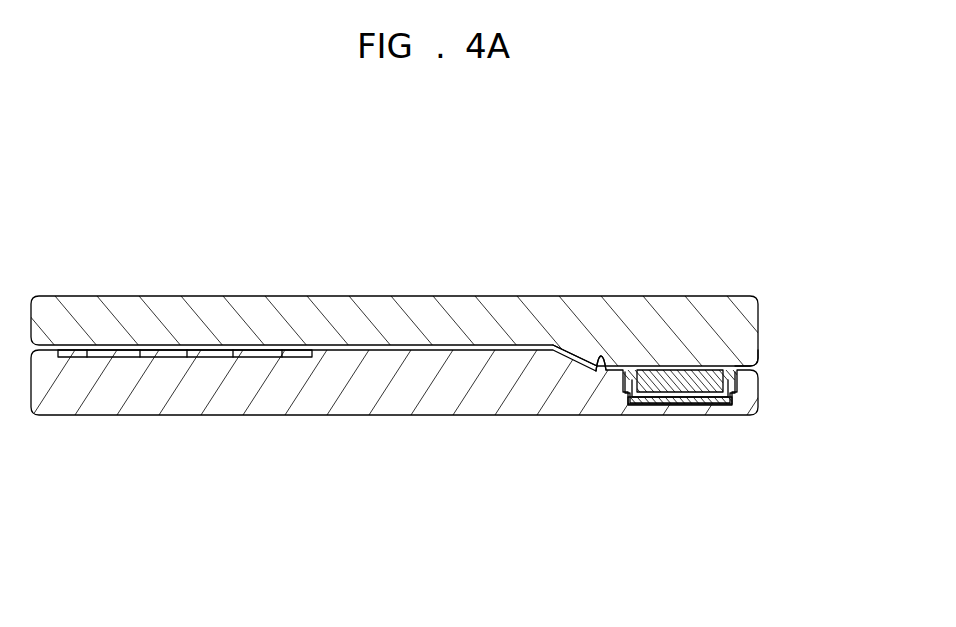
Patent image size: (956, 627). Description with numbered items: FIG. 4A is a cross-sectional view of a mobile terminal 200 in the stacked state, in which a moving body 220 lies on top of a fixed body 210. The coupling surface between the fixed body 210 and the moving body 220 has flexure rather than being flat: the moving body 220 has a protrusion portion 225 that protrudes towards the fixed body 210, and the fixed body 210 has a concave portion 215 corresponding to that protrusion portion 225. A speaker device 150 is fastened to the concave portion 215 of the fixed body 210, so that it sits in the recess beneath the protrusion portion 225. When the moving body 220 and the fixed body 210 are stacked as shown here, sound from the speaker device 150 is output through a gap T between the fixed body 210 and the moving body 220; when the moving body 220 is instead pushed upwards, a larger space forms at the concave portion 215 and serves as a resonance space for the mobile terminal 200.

The mobile terminal 200 is at (121, 171).
The moving body 220 is at (267, 302).
The fixed body 210 is at (403, 403).
The concave portion 215 is at (601, 374).
The gap T is at (559, 345).
The protrusion portion 225 is at (734, 366).
The speaker device 150 is at (697, 417).